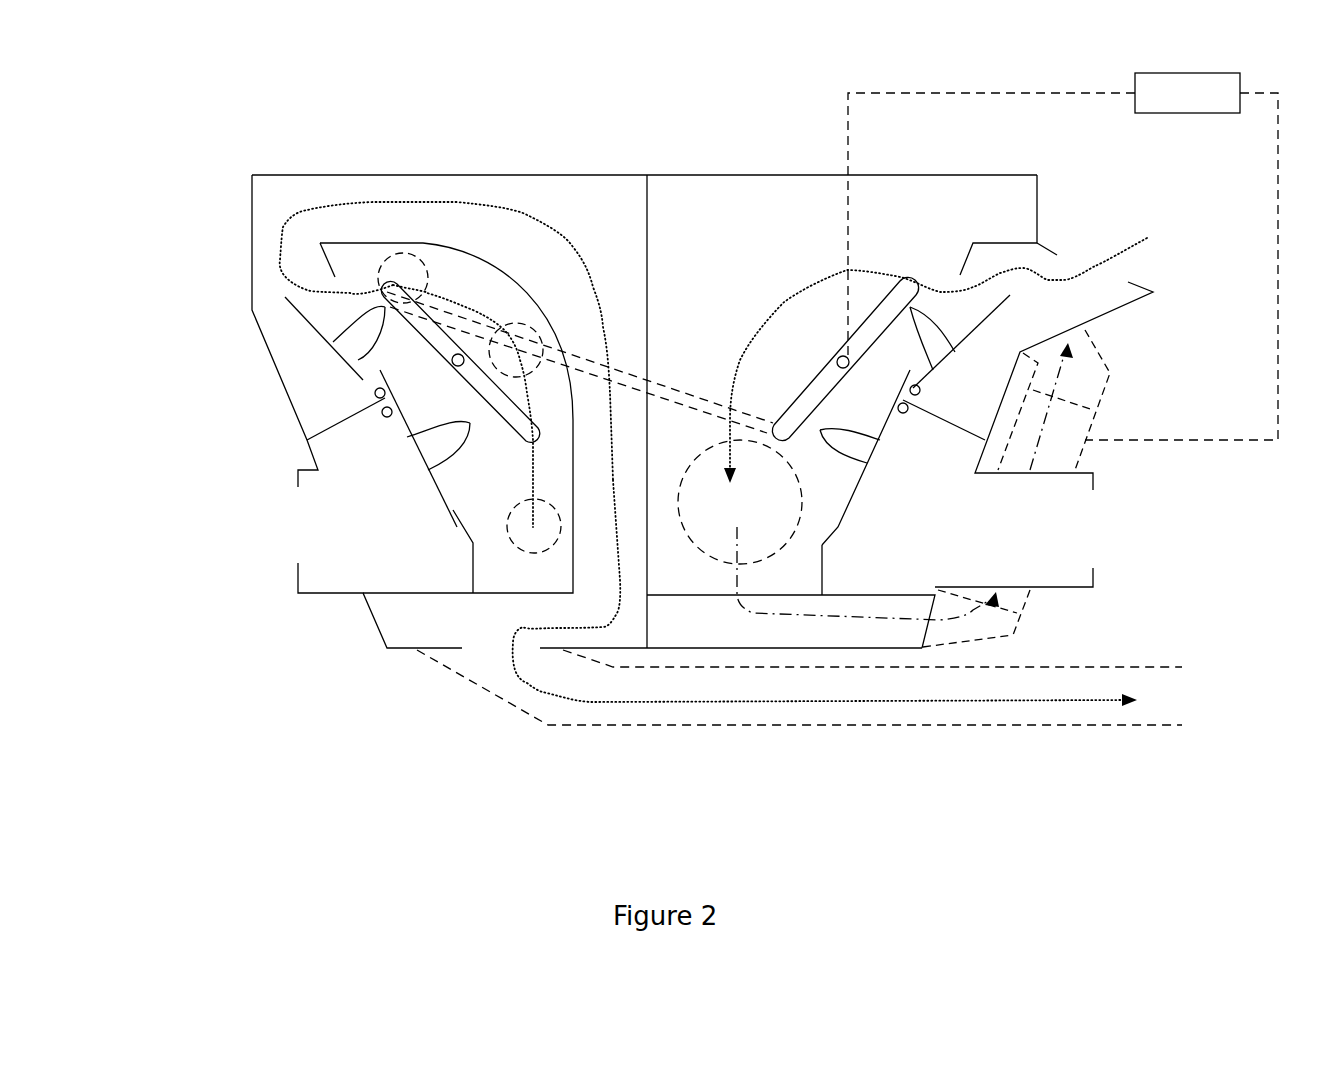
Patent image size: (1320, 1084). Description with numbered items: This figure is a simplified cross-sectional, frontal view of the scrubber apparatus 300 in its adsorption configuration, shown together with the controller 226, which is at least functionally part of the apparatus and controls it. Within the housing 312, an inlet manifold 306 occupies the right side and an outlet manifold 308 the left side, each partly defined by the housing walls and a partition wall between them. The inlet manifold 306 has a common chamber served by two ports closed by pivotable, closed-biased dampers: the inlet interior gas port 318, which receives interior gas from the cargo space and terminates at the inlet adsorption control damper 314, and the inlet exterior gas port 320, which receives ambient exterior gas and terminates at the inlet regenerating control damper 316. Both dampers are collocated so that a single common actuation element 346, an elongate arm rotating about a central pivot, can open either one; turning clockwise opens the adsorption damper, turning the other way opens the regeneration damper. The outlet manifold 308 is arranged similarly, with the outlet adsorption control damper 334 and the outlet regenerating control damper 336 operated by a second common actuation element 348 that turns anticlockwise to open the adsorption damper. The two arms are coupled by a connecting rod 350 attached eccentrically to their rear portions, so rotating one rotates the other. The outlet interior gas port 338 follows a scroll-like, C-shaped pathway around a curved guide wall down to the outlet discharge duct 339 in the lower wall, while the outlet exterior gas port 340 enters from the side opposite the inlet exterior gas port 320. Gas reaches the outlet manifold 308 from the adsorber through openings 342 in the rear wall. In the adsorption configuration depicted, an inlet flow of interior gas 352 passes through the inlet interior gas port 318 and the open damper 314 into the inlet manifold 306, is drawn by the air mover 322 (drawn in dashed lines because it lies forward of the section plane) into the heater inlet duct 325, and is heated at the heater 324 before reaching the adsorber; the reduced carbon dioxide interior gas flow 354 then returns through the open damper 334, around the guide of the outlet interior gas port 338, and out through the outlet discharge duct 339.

The scrubber apparatus 300 is at (172, 97).
The inlet manifold 306 is at (817, 192).
The outlet manifold 308 is at (560, 194).
The housing 312 is at (445, 172).
The inlet adsorption control damper 314 is at (940, 337).
The inlet regenerating control damper 316 is at (868, 452).
The inlet interior gas port 318 is at (1067, 300).
The inlet exterior gas port 320 is at (993, 541).
The air mover 322 is at (767, 516).
The heater 324 is at (1013, 600).
The heater inlet duct 325 is at (757, 637).
The outlet adsorption control damper 334 is at (360, 353).
The outlet regenerating control damper 336 is at (427, 448).
The outlet interior gas port 338 is at (335, 197).
The outlet discharge duct 339 is at (747, 720).
The outlet exterior gas port 340 is at (388, 537).
The openings 342 is at (513, 548).
The common actuation element 346 is at (813, 367).
The common actuation element 348 is at (437, 340).
The connecting rod 350 is at (680, 390).
The inlet flow of interior gas 352 is at (1110, 253).
The reduced carbon dioxide interior gas flow 354 is at (593, 277).
The controller 226 is at (1063, 256).